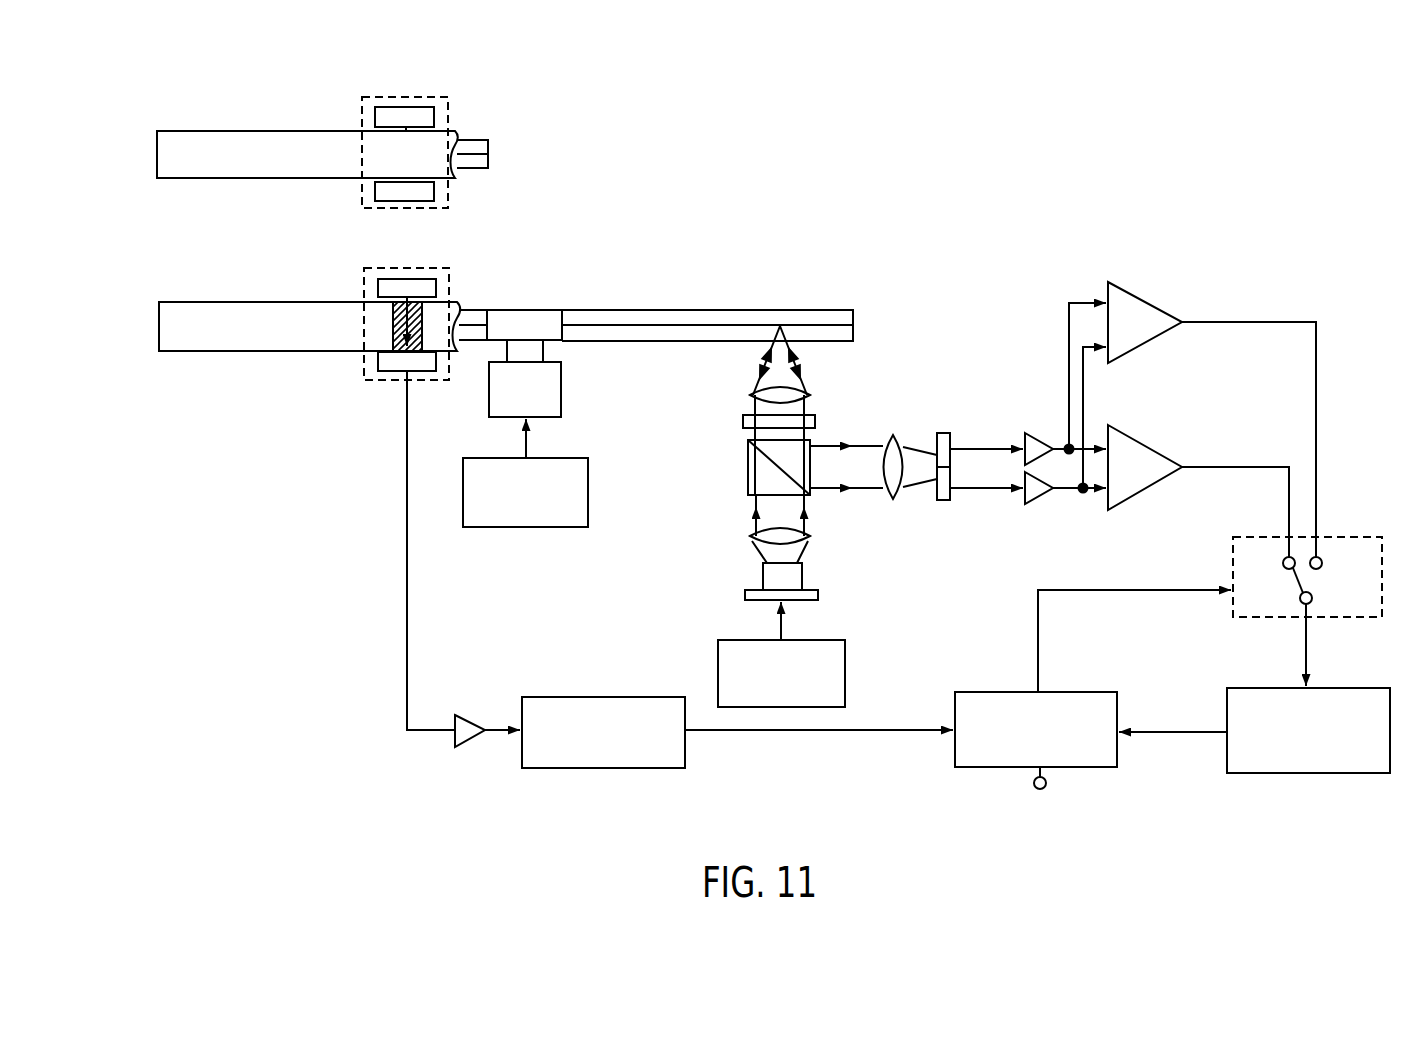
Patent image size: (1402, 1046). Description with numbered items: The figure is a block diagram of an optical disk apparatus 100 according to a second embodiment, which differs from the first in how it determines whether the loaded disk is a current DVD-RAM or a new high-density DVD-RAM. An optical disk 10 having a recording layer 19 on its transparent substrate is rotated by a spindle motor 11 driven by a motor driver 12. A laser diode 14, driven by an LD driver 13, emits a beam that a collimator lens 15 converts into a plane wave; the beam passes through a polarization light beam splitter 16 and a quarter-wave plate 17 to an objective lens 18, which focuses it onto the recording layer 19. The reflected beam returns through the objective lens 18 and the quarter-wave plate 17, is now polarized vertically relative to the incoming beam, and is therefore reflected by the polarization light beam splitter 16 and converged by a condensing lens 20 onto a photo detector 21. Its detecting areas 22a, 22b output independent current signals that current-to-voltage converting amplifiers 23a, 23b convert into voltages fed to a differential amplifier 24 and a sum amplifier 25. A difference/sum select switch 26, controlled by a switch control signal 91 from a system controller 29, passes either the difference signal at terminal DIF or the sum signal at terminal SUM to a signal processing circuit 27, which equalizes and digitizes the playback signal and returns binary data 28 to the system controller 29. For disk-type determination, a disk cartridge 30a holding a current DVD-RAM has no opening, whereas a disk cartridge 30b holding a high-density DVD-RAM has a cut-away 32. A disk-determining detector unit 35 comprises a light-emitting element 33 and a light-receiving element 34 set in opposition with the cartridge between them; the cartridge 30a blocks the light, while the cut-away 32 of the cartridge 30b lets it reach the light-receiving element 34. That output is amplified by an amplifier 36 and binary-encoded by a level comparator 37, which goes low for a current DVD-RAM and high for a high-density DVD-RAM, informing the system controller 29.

The optical disk apparatus 100 is at (1290, 208).
The disk cartridge 30a is at (265, 131).
The disk cartridge 30b is at (265, 302).
The light-emitting element 33 is at (375, 116).
The light-receiving element 34 is at (375, 190).
The disk-determining detector unit 35 is at (406, 95).
The cut-away 32 is at (422, 320).
The recording layer 19 is at (853, 318).
The optical disk 10 is at (780, 310).
The spindle motor 11 is at (561, 388).
The motor driver 12 is at (588, 490).
The LD driver 13 is at (845, 672).
The laser diode 14 is at (800, 578).
The collimator lens 15 is at (808, 536).
The polarization light beam splitter 16 is at (760, 470).
The quarter-wave plate 17 is at (815, 420).
The objective lens 18 is at (750, 395).
The condensing lens 20 is at (895, 436).
The photo detector 21 is at (944, 433).
The detecting area 22a is at (950, 443).
The detecting area 22b is at (950, 492).
The current-to-voltage converting amplifier 23a is at (1038, 433).
The current-to-voltage converting amplifier 23b is at (1038, 504).
The differential amplifier 24 is at (1140, 442).
The sum amplifier 25 is at (1140, 299).
The difference/sum select switch 26 is at (1337, 537).
The signal processing circuit 27 is at (1310, 773).
The binary data 28 is at (1177, 732).
The system controller 29 is at (1078, 692).
The switch control signal 91 is at (1145, 590).
The amplifier 36 is at (470, 715).
The level comparator 37 is at (605, 697).